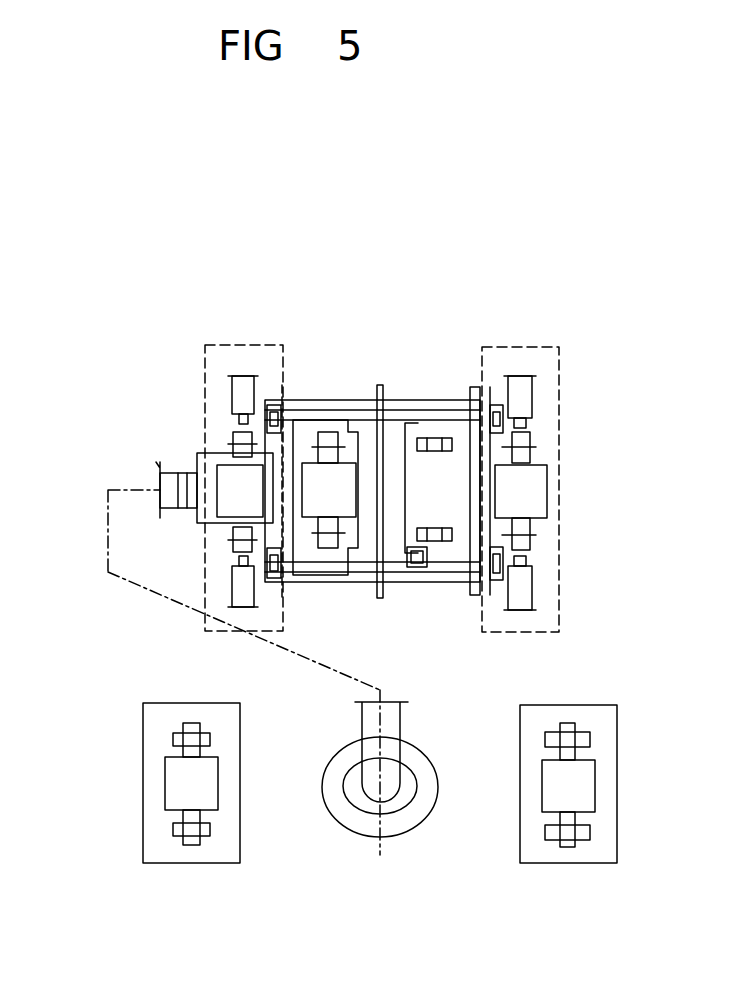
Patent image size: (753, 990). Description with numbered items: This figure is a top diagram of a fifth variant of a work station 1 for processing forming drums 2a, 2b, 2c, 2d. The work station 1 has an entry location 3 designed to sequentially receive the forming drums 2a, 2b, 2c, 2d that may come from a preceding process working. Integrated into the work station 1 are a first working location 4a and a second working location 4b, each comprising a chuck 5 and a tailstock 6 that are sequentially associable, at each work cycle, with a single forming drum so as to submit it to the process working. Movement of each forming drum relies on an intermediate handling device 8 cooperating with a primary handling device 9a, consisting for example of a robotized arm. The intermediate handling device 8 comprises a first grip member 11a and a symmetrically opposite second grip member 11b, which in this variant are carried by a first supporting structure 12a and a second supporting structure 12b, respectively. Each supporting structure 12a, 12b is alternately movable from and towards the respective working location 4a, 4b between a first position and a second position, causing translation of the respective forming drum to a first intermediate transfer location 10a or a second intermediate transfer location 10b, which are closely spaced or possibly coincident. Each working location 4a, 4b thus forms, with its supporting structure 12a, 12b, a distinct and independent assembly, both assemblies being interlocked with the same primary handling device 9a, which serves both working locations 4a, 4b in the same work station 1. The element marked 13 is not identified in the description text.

The work station 1 is at (553, 217).
The forming drum 2a is at (329, 490).
The forming drum 2b is at (214, 488).
The forming drum 2c is at (188, 785).
The forming drum 2d is at (527, 494).
The entry location 3 is at (227, 863).
The first working location 4a is at (232, 345).
The second working location 4b is at (550, 347).
The chuck 5 is at (240, 393).
The tailstock 6 is at (240, 583).
The intermediate handling device 8 is at (410, 400).
The primary handling device 9a is at (400, 802).
The first intermediate transfer location 10a is at (312, 582).
The second intermediate transfer location 10b is at (432, 577).
The first grip member 11a is at (255, 447).
The second grip member 11b is at (532, 447).
The first supporting structure 12a is at (370, 400).
The second supporting structure 12b is at (463, 400).
The roller holder 13 is at (603, 717).